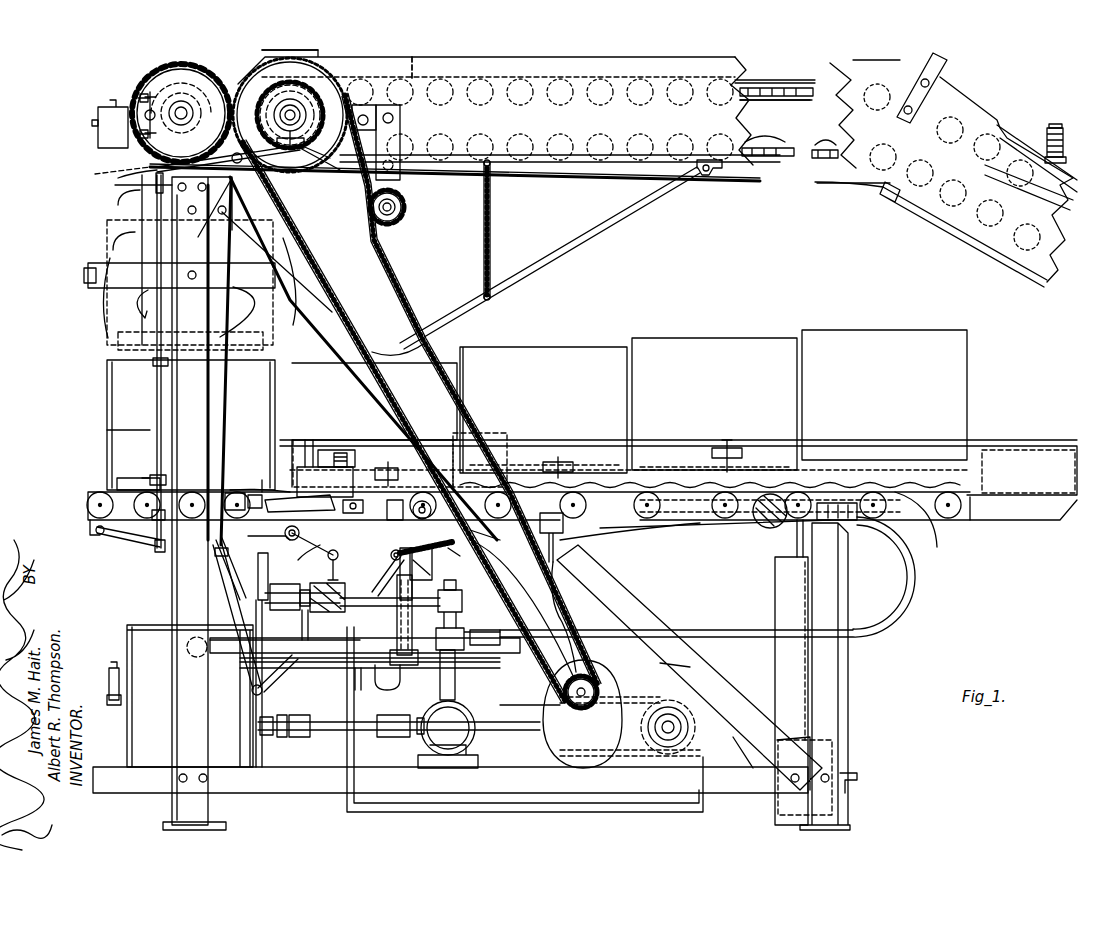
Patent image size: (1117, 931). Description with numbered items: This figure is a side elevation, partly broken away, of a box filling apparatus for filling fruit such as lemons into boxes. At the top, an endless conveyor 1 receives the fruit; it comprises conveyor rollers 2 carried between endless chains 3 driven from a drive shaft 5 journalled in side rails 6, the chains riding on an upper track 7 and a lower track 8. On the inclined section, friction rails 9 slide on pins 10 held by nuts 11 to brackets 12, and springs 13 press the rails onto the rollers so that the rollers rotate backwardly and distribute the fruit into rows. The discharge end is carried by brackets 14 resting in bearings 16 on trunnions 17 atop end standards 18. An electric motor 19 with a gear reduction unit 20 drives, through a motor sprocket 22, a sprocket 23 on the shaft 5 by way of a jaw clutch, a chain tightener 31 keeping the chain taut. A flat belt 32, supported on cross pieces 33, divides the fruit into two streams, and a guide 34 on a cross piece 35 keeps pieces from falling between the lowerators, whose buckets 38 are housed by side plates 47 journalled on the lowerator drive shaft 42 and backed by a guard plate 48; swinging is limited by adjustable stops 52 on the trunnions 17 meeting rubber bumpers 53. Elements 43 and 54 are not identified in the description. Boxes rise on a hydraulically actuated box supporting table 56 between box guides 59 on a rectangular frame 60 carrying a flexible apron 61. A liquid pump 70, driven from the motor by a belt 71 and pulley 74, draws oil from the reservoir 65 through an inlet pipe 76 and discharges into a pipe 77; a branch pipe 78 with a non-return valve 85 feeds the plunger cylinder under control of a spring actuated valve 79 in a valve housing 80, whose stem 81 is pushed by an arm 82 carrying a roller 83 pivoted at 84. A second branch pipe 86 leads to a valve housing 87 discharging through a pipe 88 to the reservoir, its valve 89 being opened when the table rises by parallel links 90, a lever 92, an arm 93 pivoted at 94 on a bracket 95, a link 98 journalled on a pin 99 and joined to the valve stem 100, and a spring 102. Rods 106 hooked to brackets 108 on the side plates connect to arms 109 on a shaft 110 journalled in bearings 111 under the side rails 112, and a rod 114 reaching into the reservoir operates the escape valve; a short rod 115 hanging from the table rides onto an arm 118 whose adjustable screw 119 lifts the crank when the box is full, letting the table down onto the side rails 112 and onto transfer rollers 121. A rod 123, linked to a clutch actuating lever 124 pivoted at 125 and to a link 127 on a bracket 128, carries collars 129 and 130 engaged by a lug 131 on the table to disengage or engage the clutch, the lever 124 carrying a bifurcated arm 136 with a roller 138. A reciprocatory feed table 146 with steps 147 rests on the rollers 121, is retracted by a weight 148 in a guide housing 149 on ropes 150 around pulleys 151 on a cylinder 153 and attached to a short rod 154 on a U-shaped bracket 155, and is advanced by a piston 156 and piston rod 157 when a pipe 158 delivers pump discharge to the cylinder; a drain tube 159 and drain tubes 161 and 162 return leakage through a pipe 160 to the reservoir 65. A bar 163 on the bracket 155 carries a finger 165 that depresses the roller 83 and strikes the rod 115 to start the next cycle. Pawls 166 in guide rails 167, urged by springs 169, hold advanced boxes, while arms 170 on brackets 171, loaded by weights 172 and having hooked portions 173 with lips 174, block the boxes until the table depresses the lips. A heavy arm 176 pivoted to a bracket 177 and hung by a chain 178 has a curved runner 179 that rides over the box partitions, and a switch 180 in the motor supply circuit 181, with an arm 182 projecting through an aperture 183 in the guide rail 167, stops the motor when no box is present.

The endless conveyor 1 is at (786, 68).
The conveyor rollers 2 is at (796, 86).
The endless chains 3 is at (760, 86).
The drive shaft 5 is at (308, 117).
The side rails 6 is at (575, 168).
The track 7 is at (760, 142).
The track 8 is at (818, 146).
The friction rails 9 is at (1012, 140).
The pins 10 is at (1050, 146).
The nuts 11 is at (1065, 128).
The brackets 12 is at (944, 78).
The springs 13 is at (1068, 150).
The brackets 14 is at (384, 100).
The bearings 16 is at (198, 108).
The trunnions 17 is at (120, 170).
The end standards 18 is at (150, 398).
The electric motor 19 is at (688, 668).
The gear reduction unit 20 is at (612, 665).
The motor sprocket 22 is at (590, 675).
The sprocket 23 is at (312, 180).
The chain tightener 31 is at (406, 207).
The belt 32 is at (818, 90).
The cross pieces 33 is at (888, 198).
The guide 34 is at (415, 58).
The cross piece 35 is at (320, 53).
The buckets 38 is at (115, 198).
The drive shaft 42 is at (163, 104).
The sprocket wheel 43 is at (200, 70).
The side plates 47 is at (150, 210).
The guard plate 48 is at (238, 326).
The adjustable stops 52 is at (140, 98).
The rubber bumpers 53 is at (92, 124).
The switch box 54 is at (97, 112).
The box supporting table 56 is at (116, 486).
The box guides 59 is at (100, 318).
The rectangular frame 60 is at (90, 282).
The flexible apron 61 is at (106, 338).
The liquid reservoir 65 is at (128, 637).
The liquid pump 70 is at (428, 742).
The belt 71 is at (522, 707).
The second pulley 74 is at (456, 588).
The inlet pipe 76 is at (322, 736).
The pipe 77 is at (456, 682).
The branch pipe 78 is at (382, 604).
The valve 79 is at (332, 590).
The valve housing 80 is at (312, 612).
The stem 81 is at (300, 558).
The arm 82 is at (320, 548).
The roller 83 is at (282, 538).
The pivot pin 84 is at (340, 555).
The non-return valve 85 is at (285, 606).
The second branch pipe 86 is at (462, 618).
The valve housing 87 is at (396, 630).
The pipe 88 is at (330, 670).
The valve 89 is at (462, 602).
The parallel links 90 is at (245, 672).
The lever 92 is at (268, 683).
The arm 93 is at (393, 554).
The pivot pin 94 is at (385, 566).
The supporting bracket 95 is at (428, 585).
The link 98 is at (425, 549).
The pin 99 is at (424, 578).
The valve stem 100 is at (398, 574).
The spring 102 is at (452, 572).
The rods 106 is at (225, 406).
The brackets 108 is at (200, 232).
The arms 109 is at (212, 558).
The shaft 110 is at (230, 492).
The bearings 111 is at (254, 494).
The side rails 112 is at (92, 520).
The rod 114 is at (210, 605).
The short rod 115 is at (268, 576).
The arm 118 is at (223, 572).
The adjustable screw 119 is at (225, 548).
The rollers 121 is at (86, 505).
The rod 123 is at (120, 430).
The clutch actuating lever 124 is at (118, 178).
The pivot 125 is at (233, 180).
The link 127 is at (150, 548).
The bracket 128 is at (95, 536).
The collar 129 is at (152, 363).
The collar 130 is at (148, 479).
The lug 131 is at (150, 480).
The bifurcated arm 136 is at (272, 168).
The roller 138 is at (326, 162).
The reciprocatory feed table 146 is at (938, 540).
The steps 147 is at (845, 460).
The weight 148 is at (840, 806).
The guide housing 149 is at (774, 593).
The ropes 150 is at (822, 538).
The pulleys 151 is at (782, 524).
The cylinder 153 is at (722, 530).
The short rod 154 is at (526, 548).
The U-shaped bracket 155 is at (522, 498).
The piston 156 is at (700, 560).
The piston rod 157 is at (670, 536).
The pipe 158 is at (913, 600).
The drain tube 159 is at (562, 616).
The pipe 160 is at (358, 691).
The drain tube 161 is at (302, 632).
The drain tube 162 is at (392, 692).
The bar 163 is at (421, 500).
The depending finger 165 is at (480, 548).
The pawls 166 is at (735, 446).
The guide rails 167 is at (660, 440).
The springs 169 is at (718, 446).
The arms 170 is at (296, 528).
The brackets 171 is at (352, 499).
The weights 172 is at (394, 498).
The hooked forward portions 173 is at (282, 510).
The lips 174 is at (268, 468).
The heavy arm 176 is at (540, 280).
The bracket 177 is at (712, 176).
The chain 178 is at (491, 246).
The curved runner 179 is at (395, 350).
The electric switch 180 is at (310, 466).
The supply circuit 181 is at (302, 450).
The arm 182 is at (342, 452).
The aperture 183 is at (330, 450).